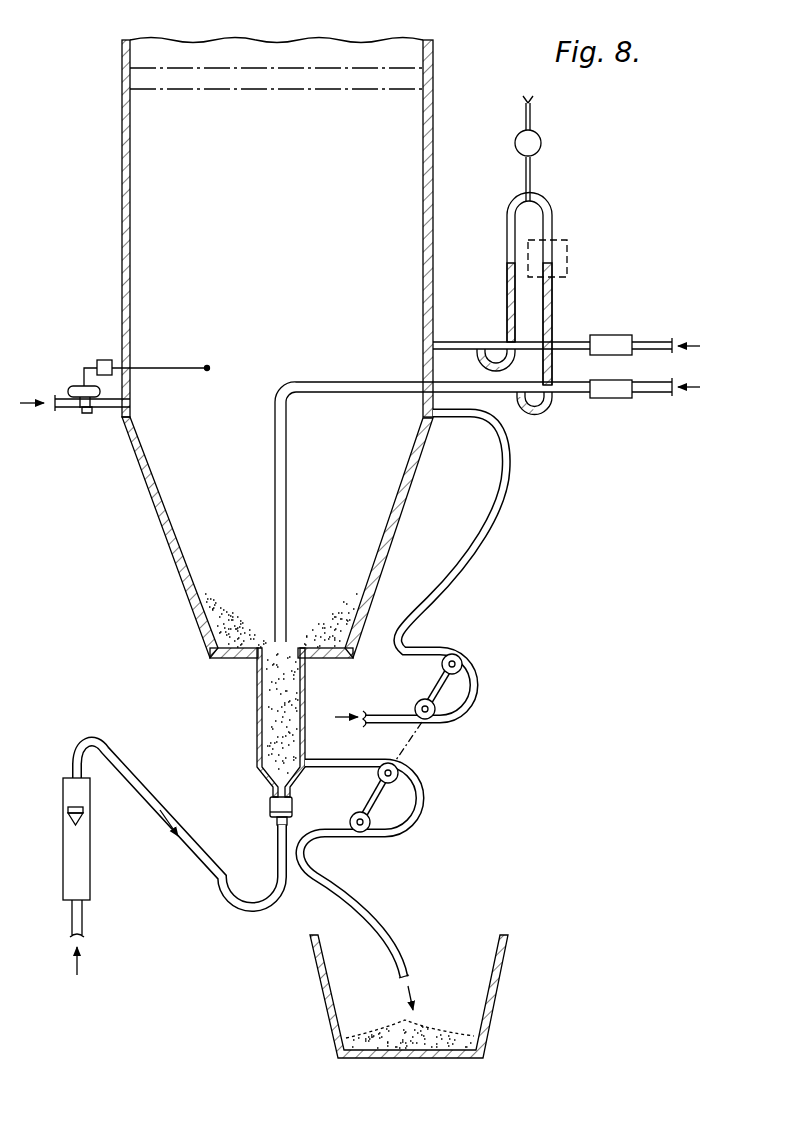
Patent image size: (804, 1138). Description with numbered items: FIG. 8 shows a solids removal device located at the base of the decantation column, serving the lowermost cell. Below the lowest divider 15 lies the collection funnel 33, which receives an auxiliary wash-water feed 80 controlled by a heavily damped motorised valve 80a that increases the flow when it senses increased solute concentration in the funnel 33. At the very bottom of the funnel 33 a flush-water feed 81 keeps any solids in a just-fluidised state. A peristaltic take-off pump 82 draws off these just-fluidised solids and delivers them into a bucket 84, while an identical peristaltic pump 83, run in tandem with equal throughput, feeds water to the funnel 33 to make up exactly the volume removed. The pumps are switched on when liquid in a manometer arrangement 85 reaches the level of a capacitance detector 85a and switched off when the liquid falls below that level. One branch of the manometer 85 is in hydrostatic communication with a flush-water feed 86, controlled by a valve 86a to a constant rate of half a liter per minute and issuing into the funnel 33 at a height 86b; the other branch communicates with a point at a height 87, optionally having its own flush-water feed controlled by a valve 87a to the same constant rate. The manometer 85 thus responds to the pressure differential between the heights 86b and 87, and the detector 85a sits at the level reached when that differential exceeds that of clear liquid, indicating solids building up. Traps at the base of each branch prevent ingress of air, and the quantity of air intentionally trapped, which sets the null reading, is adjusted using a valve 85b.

The lowest divider 15 is at (415, 79).
The collection funnel 33 is at (150, 489).
The auxiliary wash-water feed 80 is at (70, 405).
The motorised valve 80a is at (78, 385).
The flush-water feed 81 is at (150, 770).
The peristaltic take-off pump 82 is at (375, 790).
The peristaltic pump 83 is at (440, 680).
The bucket 84 is at (500, 968).
The manometer arrangement 85 is at (552, 205).
The capacitance detector 85a is at (567, 247).
The valve 85b is at (536, 142).
The flush-water feed 86 is at (652, 396).
The valve 86a is at (610, 398).
The height 86b is at (303, 631).
The height 87 is at (423, 345).
The valve 87a is at (612, 333).